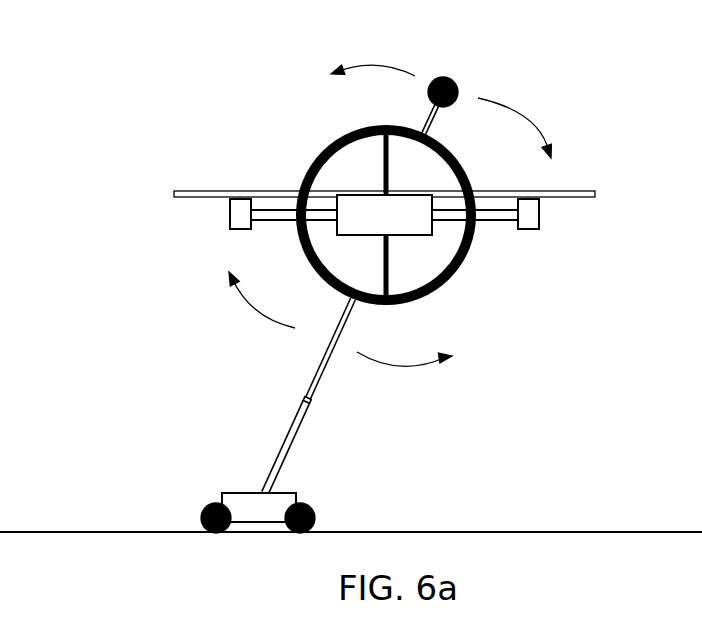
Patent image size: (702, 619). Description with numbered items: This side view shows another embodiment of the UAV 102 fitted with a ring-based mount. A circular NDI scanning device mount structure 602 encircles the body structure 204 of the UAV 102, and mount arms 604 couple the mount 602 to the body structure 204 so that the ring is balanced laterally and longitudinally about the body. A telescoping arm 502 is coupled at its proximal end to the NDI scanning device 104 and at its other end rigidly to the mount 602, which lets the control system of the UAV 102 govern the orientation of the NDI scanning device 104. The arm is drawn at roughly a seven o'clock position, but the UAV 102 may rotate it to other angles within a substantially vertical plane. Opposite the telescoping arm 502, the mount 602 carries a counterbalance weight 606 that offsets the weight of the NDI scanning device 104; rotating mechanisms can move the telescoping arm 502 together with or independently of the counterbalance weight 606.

The UAV 102 is at (143, 86).
The NDI scanning device 104 is at (298, 492).
The body structure 204 is at (384, 215).
The telescoping arm 502 is at (270, 417).
The NDI scanning device mount structure 602 is at (308, 166).
The mount arms 604 is at (383, 172).
The counterbalance weight 606 is at (458, 88).